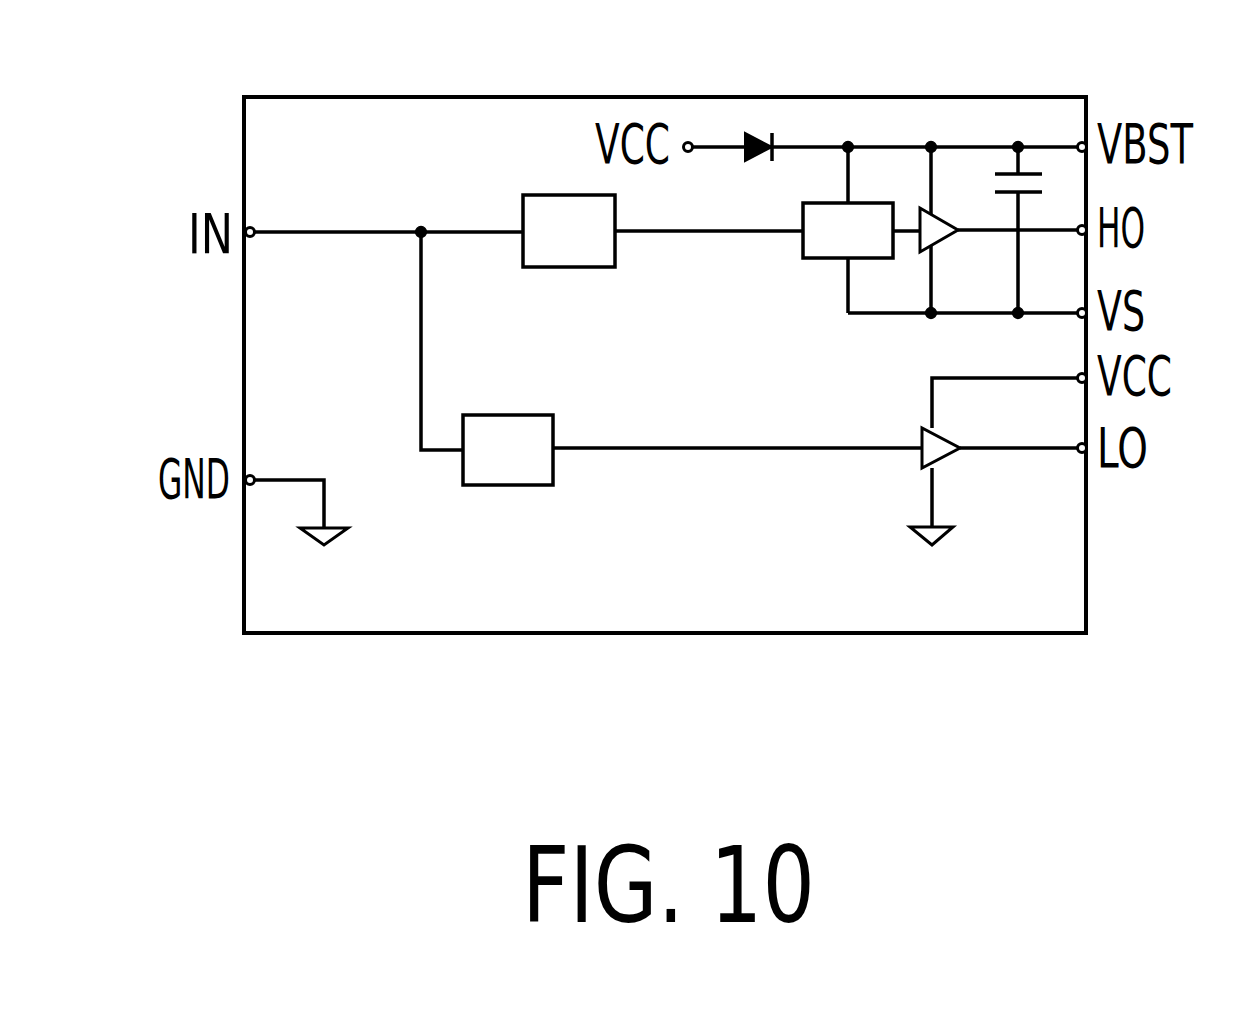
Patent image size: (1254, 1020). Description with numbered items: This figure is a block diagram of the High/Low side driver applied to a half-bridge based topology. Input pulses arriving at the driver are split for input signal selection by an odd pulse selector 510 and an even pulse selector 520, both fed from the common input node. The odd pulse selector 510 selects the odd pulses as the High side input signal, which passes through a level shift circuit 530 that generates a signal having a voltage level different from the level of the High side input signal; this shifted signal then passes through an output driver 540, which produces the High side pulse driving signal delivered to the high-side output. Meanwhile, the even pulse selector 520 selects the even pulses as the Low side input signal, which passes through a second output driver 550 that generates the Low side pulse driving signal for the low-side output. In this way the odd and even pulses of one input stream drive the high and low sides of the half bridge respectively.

The odd pulse selector 510 is at (567, 267).
The even pulse selector 520 is at (512, 485).
The level shift circuit 530 is at (823, 258).
The output driver 540 is at (938, 223).
The output driver 550 is at (943, 458).